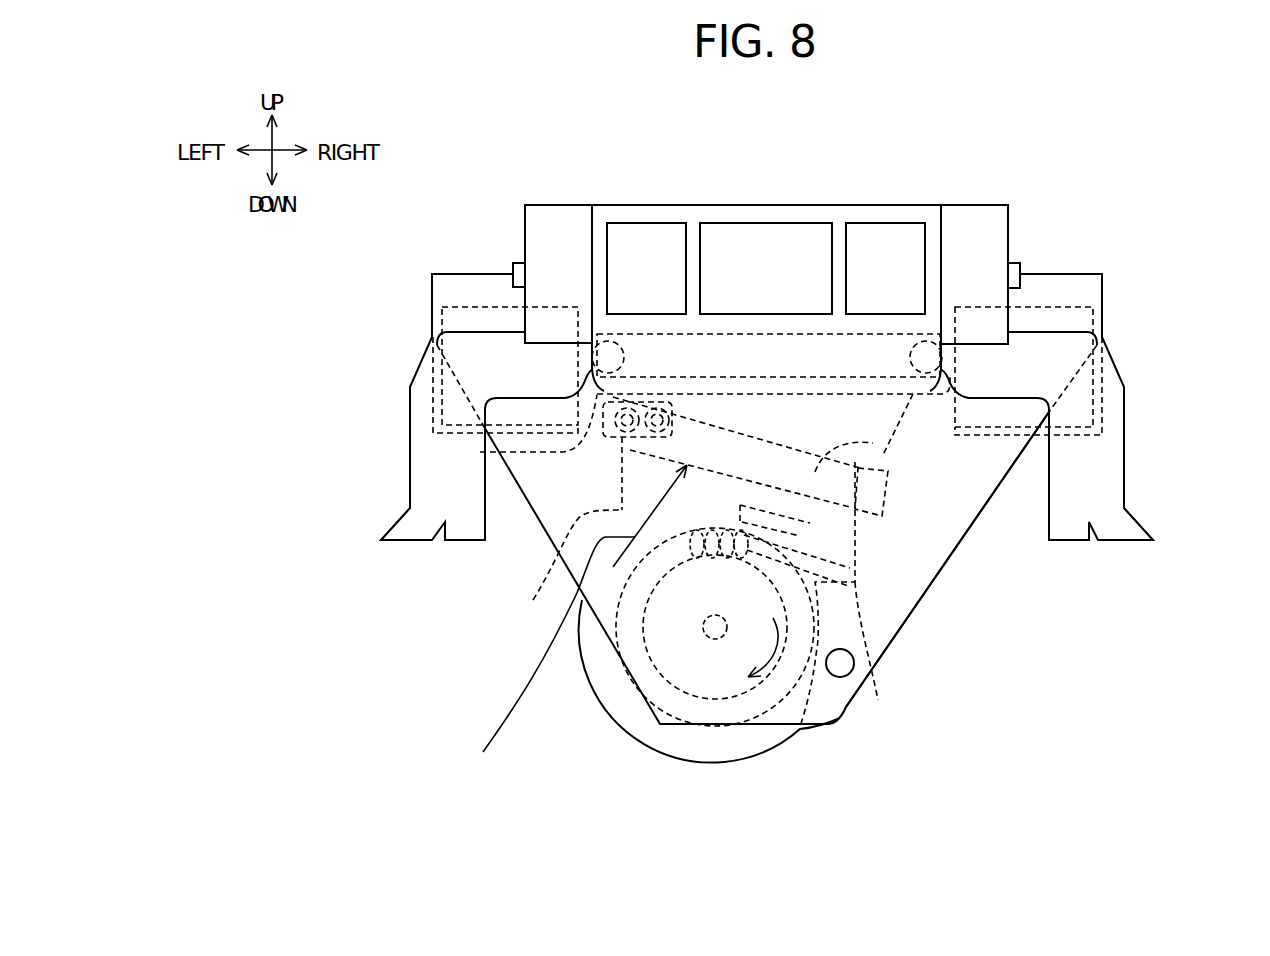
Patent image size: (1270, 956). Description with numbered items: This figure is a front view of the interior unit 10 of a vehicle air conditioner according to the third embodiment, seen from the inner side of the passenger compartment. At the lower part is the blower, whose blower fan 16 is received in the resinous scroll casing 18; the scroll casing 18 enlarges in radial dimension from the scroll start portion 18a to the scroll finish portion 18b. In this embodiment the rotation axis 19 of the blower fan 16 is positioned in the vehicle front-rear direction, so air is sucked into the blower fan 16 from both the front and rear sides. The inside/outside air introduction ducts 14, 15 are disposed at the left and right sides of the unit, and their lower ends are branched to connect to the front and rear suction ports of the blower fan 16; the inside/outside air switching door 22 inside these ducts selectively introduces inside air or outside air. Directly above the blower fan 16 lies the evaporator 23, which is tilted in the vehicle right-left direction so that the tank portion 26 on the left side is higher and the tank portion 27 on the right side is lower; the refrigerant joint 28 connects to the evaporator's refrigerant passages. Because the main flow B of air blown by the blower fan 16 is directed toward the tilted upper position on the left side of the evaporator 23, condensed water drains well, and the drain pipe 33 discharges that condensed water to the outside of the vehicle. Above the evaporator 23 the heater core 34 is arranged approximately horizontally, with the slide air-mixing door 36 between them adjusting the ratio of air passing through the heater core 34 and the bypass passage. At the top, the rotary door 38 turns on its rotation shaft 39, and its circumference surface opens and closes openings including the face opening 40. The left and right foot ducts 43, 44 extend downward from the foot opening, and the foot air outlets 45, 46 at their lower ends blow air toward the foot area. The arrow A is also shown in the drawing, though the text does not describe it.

The interior unit 10 is at (587, 688).
The inside/outside air introduction duct 14 is at (523, 497).
The inside/outside air introduction duct 15 is at (927, 592).
The blower fan 16 is at (703, 710).
The scroll casing 18 is at (633, 732).
The scroll start portion 18a is at (878, 700).
The scroll finish portion 18b is at (533, 600).
The rotation axis 19 is at (707, 632).
The inside/outside air switching door 22 is at (473, 307).
The evaporator 23 is at (873, 443).
The tank portion 26 is at (480, 452).
The tank portion 27 is at (870, 500).
The refrigerant joint 28 is at (620, 445).
The drain pipe 33 is at (840, 677).
The heater core 34 is at (667, 347).
The slide air-mixing door 36 is at (803, 390).
The rotary door 38 is at (562, 233).
The rotation shaft 39 is at (517, 262).
The face opening 40 is at (642, 230).
The left foot duct 43 is at (410, 405).
The right foot duct 44 is at (1125, 462).
The foot air outlet 45 is at (395, 540).
The foot air outlet 46 is at (1070, 543).
The direction A is at (773, 647).
The main flow B is at (577, 620).